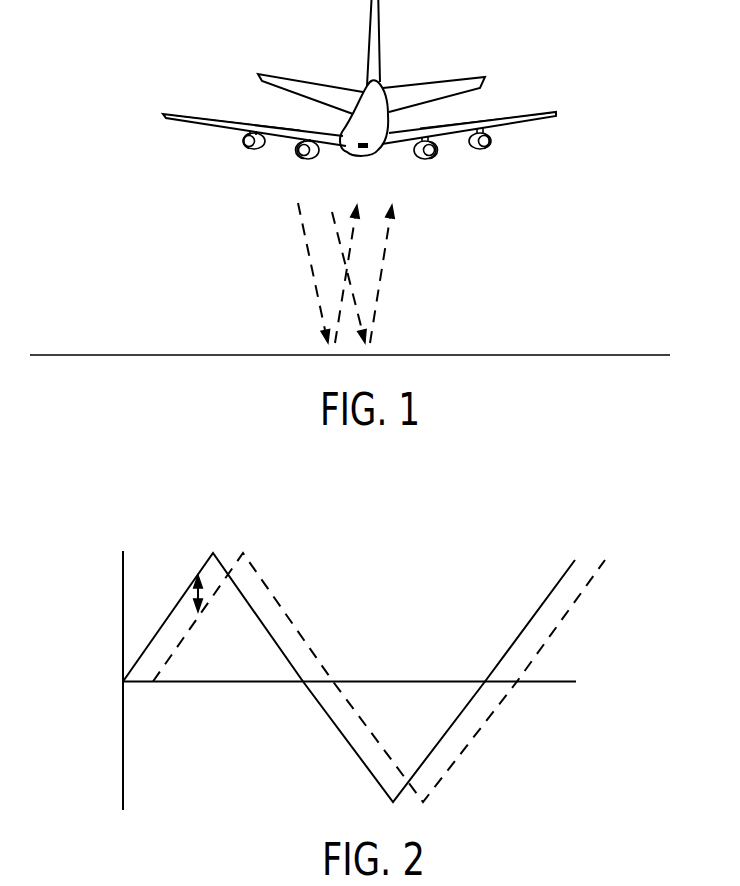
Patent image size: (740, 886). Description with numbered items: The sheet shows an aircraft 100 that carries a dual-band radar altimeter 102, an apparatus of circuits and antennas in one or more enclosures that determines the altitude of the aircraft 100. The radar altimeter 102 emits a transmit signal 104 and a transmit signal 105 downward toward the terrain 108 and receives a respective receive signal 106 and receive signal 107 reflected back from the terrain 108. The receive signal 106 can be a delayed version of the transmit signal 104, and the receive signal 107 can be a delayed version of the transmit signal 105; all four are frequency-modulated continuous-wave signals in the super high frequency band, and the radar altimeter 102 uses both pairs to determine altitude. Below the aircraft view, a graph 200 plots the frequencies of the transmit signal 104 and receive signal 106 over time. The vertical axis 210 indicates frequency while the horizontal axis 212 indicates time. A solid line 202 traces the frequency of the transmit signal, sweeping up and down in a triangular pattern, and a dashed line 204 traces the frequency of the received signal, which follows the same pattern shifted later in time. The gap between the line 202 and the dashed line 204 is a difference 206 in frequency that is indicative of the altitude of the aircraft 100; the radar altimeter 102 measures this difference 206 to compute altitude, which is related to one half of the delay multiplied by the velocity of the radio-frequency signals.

In FIG. 1, the aircraft 100 is at (310, 30).
In FIG. 1, the radar altimeter 102 is at (380, 90).
In FIG. 1, the transmit signal 104 is at (305, 255).
In FIG. 1, the transmit signal 105 is at (333, 213).
In FIG. 1, the receive signal 106 is at (383, 270).
In FIG. 1, the receive signal 107 is at (353, 247).
In FIG. 1, the terrain 108 is at (472, 355).
In FIG. 2, the graph 200 is at (203, 536).
In FIG. 2, the line 202 is at (317, 702).
In FIG. 2, the dashed line 204 is at (285, 610).
In FIG. 2, the difference 206 is at (196, 586).
In FIG. 2, the vertical axis 210 is at (122, 587).
In FIG. 2, the horizontal axis 212 is at (546, 683).